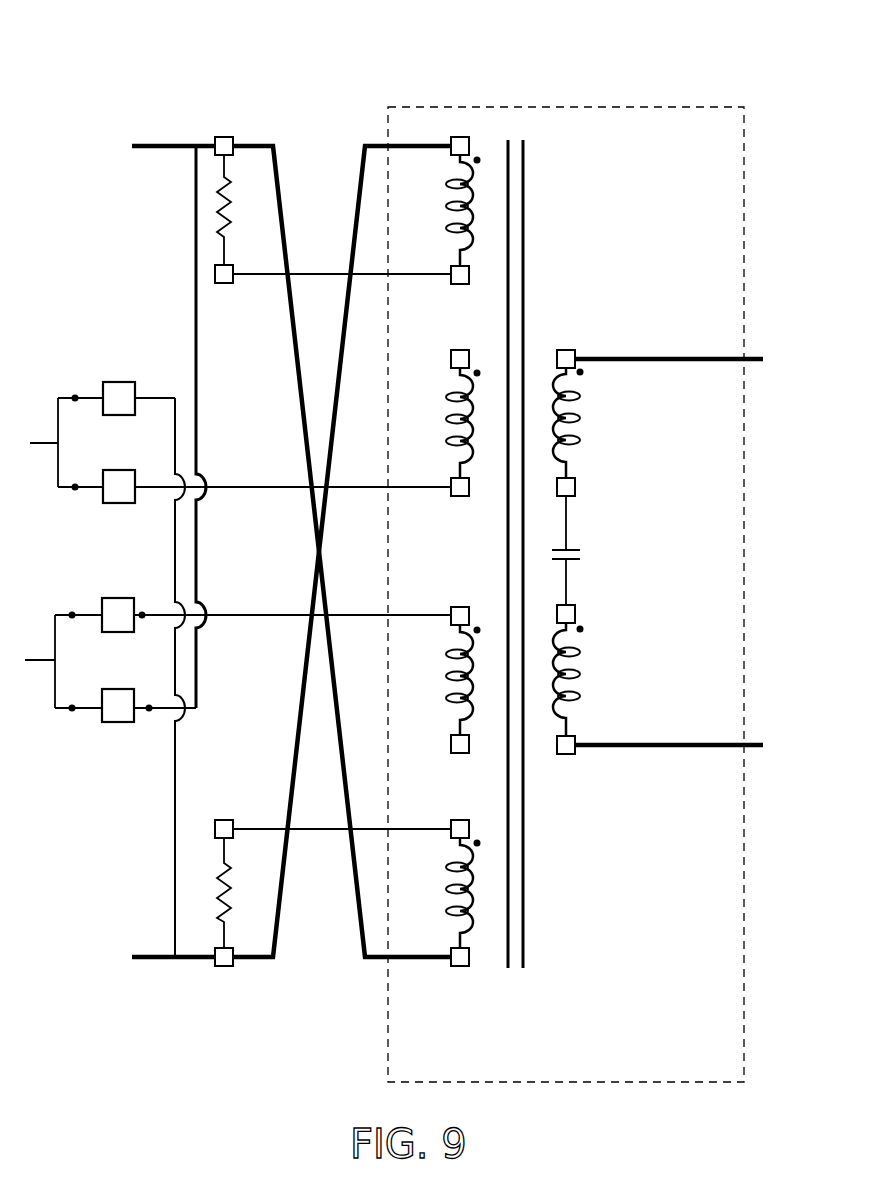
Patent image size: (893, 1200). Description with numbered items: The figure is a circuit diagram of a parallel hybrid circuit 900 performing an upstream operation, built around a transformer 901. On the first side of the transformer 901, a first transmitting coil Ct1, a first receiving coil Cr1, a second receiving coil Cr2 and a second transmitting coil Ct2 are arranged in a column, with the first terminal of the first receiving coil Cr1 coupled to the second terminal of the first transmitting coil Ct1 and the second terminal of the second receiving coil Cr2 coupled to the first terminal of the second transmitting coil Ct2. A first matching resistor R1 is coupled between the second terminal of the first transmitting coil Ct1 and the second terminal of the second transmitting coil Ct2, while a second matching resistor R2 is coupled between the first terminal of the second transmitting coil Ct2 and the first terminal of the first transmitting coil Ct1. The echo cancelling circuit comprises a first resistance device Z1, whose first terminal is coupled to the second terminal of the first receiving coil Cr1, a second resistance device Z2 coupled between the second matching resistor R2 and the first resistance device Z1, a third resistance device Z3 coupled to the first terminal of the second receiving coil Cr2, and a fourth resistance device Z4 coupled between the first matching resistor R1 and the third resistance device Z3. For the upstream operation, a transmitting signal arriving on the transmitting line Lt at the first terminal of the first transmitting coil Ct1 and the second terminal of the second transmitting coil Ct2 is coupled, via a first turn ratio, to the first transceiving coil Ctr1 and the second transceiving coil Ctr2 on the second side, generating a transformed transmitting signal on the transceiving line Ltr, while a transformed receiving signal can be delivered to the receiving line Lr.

The parallel hybrid circuit 900 is at (413, 548).
The transformer 901 is at (566, 557).
The first resistance device Z1 is at (120, 505).
The second resistance device Z2 is at (120, 380).
The third resistance device Z3 is at (128, 633).
The fourth resistance device Z4 is at (118, 724).
The first matching resistor R1 is at (240, 210).
The second matching resistor R2 is at (240, 893).
The first transmitting coil Ct1 is at (478, 250).
The first receiving coil Cr1 is at (478, 463).
The second receiving coil Cr2 is at (478, 720).
The second transmitting coil Ct2 is at (478, 933).
The first transceiving coil Ctr1 is at (582, 422).
The second transceiving coil Ctr2 is at (582, 680).
The receiving line Lr is at (158, 150).
The transmitting line Lt is at (152, 960).
The transceiving line Ltr is at (710, 363).